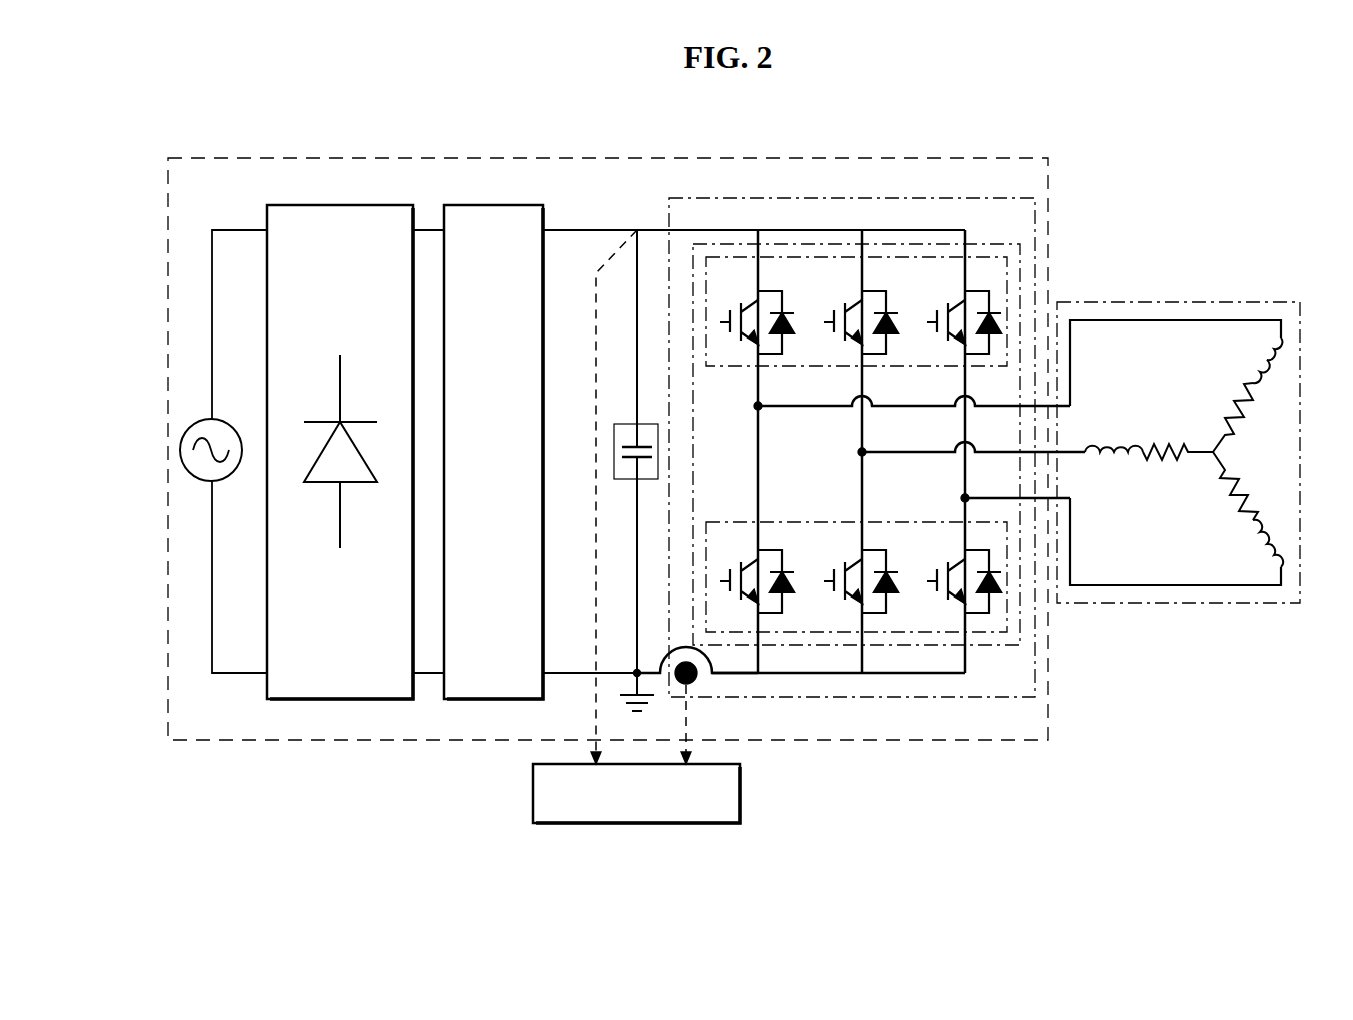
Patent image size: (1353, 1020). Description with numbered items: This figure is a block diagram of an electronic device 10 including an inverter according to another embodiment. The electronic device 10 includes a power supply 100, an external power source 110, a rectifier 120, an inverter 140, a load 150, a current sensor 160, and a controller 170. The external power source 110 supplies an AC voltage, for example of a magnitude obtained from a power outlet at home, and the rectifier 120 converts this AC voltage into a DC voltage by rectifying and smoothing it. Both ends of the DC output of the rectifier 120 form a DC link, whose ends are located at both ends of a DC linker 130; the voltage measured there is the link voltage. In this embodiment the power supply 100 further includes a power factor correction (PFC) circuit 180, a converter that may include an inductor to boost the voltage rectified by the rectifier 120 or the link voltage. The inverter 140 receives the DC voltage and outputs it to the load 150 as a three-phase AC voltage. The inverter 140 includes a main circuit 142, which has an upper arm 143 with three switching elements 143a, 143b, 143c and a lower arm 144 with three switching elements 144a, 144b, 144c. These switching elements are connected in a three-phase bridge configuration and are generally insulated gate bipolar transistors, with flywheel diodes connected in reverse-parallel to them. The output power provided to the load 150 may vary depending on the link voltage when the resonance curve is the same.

The electronic device 10 is at (960, 140).
The power supply 100 is at (596, 157).
The external power source 110 is at (233, 419).
The rectifier 120 is at (341, 204).
The DC linker 130 is at (620, 422).
The inverter 140 is at (815, 197).
The main circuit 142 is at (997, 242).
The upper arm 143 is at (805, 368).
The switching element 143a is at (747, 305).
The switching element 143b is at (851, 305).
The switching element 143c is at (954, 305).
The lower arm 144 is at (793, 522).
The switching element 144a is at (747, 564).
The switching element 144b is at (851, 564).
The switching element 144c is at (954, 564).
The load 150 is at (1178, 300).
The current sensor 160 is at (694, 682).
The controller 170 is at (742, 793).
The power factor correction (PFC) circuit 180 is at (493, 204).